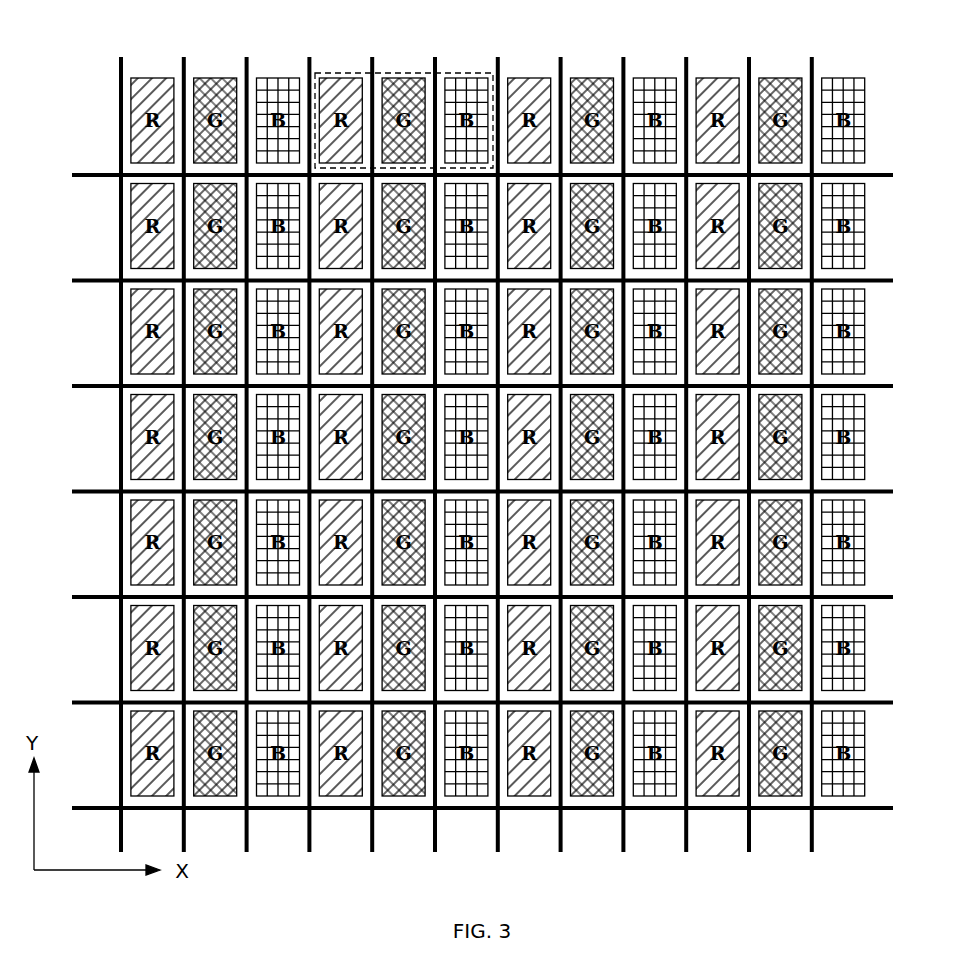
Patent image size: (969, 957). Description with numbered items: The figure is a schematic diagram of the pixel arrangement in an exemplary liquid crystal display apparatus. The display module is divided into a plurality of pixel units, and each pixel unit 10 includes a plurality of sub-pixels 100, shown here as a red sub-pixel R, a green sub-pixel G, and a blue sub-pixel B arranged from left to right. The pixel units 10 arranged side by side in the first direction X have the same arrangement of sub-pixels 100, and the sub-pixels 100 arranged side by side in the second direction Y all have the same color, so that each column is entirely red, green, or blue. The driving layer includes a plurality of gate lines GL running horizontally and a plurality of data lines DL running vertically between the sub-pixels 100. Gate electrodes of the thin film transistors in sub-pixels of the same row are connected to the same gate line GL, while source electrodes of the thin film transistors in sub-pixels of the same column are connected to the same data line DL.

The data line DL is at (120, 80).
The gate line GL is at (86, 175).
The pixel unit 10 is at (410, 73).
The sub-pixel 100 is at (533, 92).